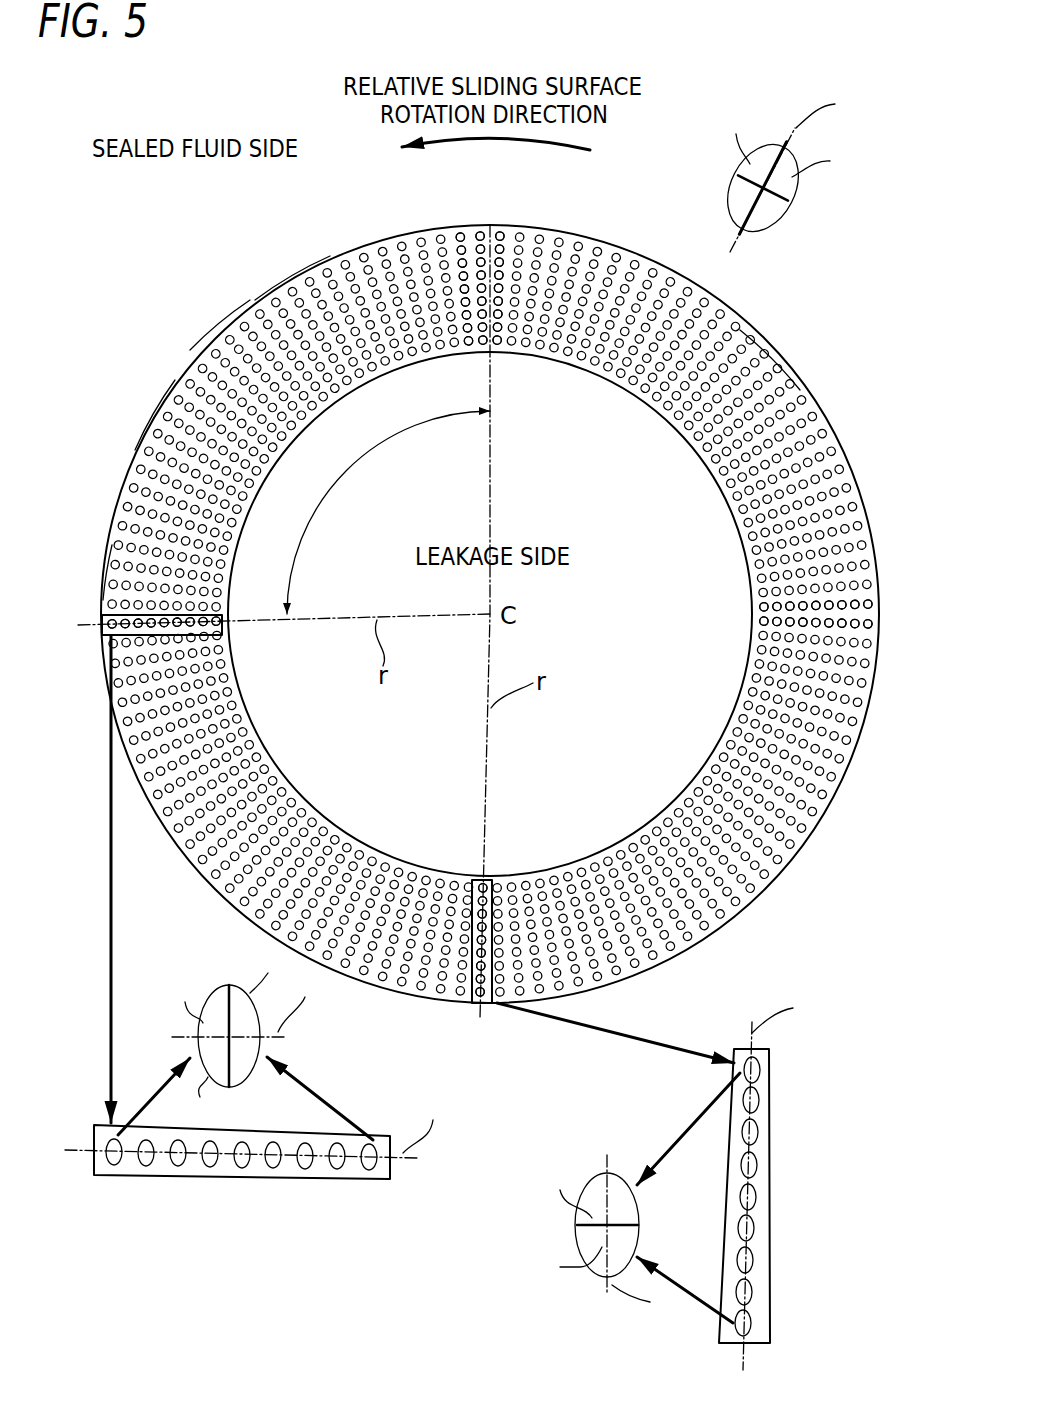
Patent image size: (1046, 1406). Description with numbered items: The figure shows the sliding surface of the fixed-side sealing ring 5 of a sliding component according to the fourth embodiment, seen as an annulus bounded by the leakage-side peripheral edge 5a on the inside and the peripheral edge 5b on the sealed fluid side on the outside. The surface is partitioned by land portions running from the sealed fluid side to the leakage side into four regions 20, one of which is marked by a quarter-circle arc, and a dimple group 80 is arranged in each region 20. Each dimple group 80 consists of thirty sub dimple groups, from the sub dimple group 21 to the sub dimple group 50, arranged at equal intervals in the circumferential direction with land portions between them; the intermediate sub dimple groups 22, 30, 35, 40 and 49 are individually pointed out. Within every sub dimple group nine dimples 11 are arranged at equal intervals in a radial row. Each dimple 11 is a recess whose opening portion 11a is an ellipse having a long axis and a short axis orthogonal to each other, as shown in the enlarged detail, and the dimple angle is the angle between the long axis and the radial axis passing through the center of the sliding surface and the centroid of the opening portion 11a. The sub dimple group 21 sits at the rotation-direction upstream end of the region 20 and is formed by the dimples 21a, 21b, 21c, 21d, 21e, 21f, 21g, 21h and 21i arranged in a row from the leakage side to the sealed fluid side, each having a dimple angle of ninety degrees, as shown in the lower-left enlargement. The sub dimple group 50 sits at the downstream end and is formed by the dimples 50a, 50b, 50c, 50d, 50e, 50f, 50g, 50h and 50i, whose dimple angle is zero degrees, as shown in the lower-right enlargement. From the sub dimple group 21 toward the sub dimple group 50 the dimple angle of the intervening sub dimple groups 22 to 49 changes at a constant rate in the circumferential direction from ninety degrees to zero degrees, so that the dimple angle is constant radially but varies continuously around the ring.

The fixed-side sealing ring 5 is at (504, 614).
The leakage-side peripheral edge 5a is at (710, 476).
The peripheral edge on the sealed fluid side 5b is at (831, 419).
The dimple 11 is at (730, 208).
The opening portion 11a is at (766, 228).
The region 20 is at (388, 512).
The sub dimple group 21 is at (228, 622).
The dimple 21a is at (369, 1170).
The dimple 21b is at (337, 1170).
The dimple 21c is at (305, 1170).
The dimple 21d is at (273, 1170).
The dimple 21e is at (242, 1170).
The dimple 21f is at (210, 1170).
The dimple 21g is at (178, 1170).
The dimple 21h is at (146, 1170).
The dimple 21i is at (114, 1170).
The sub dimple group 22 is at (457, 226).
The sub dimple group 30 is at (304, 271).
The sub dimple group 35 is at (224, 327).
The sub dimple group 40 is at (154, 412).
The sub dimple group 49 is at (99, 579).
The sub dimple group 50 is at (99, 603).
The dimple 50a is at (760, 1070).
The dimple 50b is at (760, 1100).
The dimple 50c is at (760, 1132).
The dimple 50d is at (760, 1165).
The dimple 50e is at (760, 1197).
The dimple 50f is at (760, 1228).
The dimple 50g is at (760, 1260).
The dimple 50h is at (760, 1292).
The dimple 50i is at (760, 1323).
The dimple group 80 is at (777, 354).